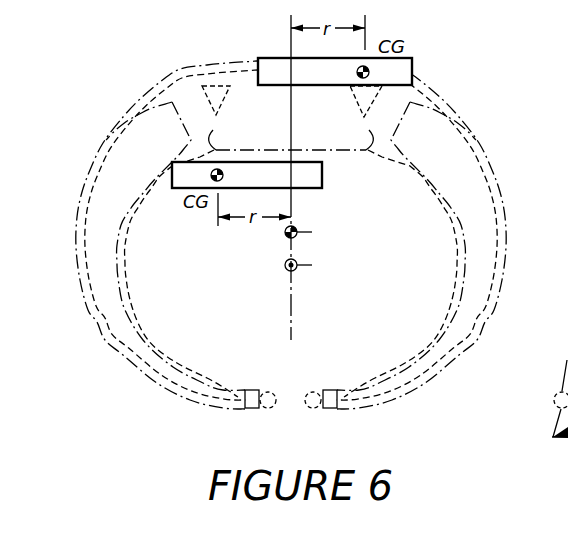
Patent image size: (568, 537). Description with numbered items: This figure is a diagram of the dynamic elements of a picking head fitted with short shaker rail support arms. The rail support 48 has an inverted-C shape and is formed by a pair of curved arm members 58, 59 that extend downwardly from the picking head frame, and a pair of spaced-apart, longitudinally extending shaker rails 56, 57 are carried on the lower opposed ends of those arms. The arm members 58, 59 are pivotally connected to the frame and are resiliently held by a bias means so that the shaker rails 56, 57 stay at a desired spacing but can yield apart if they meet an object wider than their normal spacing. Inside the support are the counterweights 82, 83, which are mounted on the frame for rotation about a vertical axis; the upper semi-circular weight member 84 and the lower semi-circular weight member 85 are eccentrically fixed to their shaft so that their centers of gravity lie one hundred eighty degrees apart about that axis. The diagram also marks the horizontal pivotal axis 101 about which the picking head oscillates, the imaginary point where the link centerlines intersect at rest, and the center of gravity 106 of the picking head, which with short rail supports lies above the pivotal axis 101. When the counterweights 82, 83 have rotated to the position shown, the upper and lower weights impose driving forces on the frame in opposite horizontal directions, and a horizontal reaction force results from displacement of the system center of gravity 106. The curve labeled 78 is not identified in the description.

The rail support 48 is at (517, 177).
The outer rim of ring 78 is at (196, 59).
The counterweight set 82 is at (404, 69).
The upper semi-circular weight member 84 is at (360, 80).
The counterweight 83 is at (183, 168).
The lower semi-circular weight member 85 is at (224, 172).
The curved arm member 58 is at (115, 314).
The curved arm member 59 is at (466, 311).
The shaker rail 56 is at (271, 391).
The shaker rail 57 is at (316, 391).
The center of gravity 106 is at (285, 232).
The pivotal axis 101 is at (285, 265).